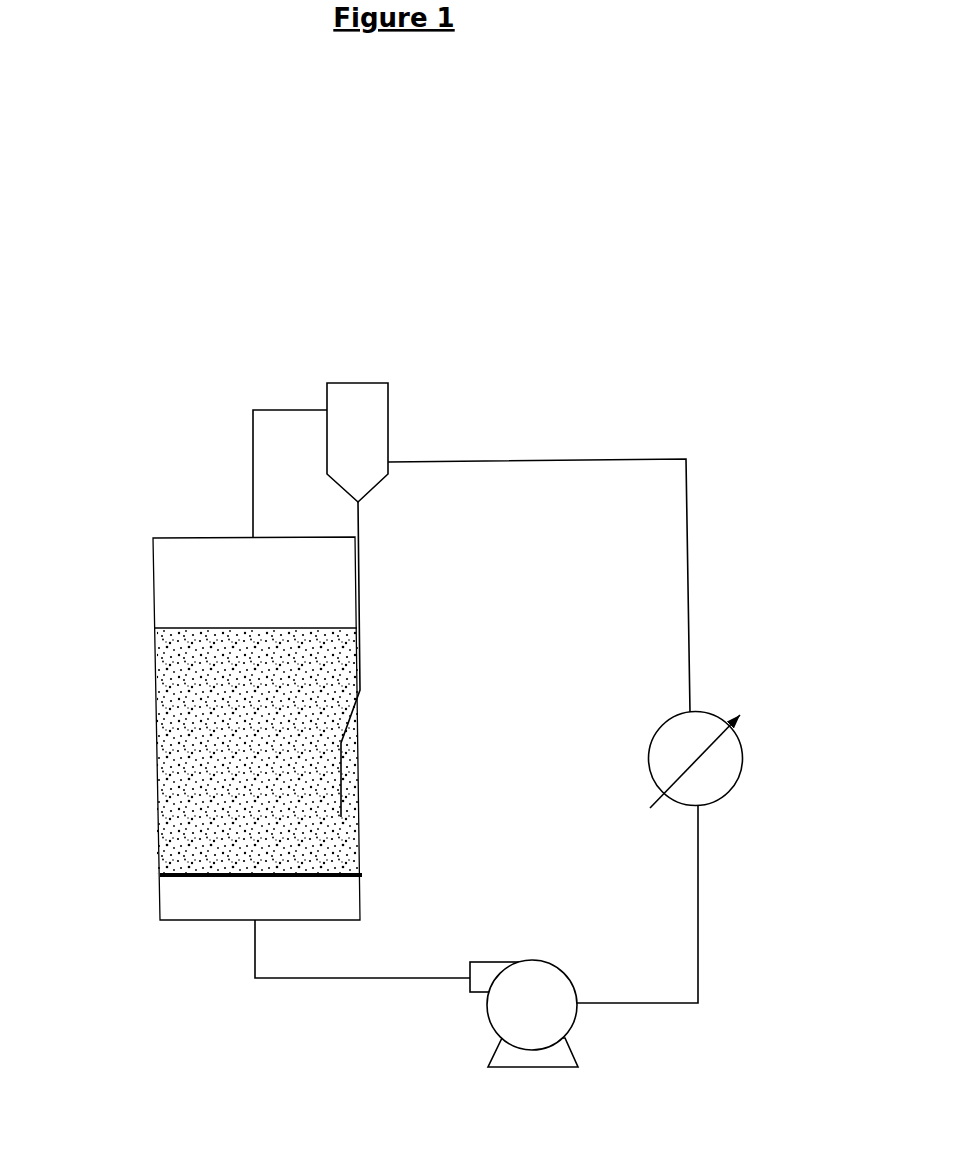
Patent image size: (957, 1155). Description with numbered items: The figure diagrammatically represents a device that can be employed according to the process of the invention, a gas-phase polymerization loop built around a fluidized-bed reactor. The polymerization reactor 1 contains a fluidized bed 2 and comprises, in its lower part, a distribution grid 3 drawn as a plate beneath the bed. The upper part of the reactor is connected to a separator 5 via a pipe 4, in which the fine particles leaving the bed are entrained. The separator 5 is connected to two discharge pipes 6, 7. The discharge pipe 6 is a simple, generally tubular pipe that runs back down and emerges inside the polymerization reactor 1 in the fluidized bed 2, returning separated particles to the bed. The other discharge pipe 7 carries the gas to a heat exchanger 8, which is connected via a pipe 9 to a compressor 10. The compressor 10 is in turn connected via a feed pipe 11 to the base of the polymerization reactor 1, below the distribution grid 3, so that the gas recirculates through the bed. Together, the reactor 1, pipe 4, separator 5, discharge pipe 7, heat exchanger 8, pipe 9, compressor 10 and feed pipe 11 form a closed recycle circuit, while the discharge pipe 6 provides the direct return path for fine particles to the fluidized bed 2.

The polymerization reactor 1 is at (204, 725).
The fluidized bed 2 is at (221, 752).
The distribution grid 3 is at (232, 919).
The pipe 4 is at (236, 473).
The separator 5 is at (309, 417).
The discharge pipe 6 is at (420, 659).
The discharge pipe 7 is at (606, 585).
The heat exchanger 8 is at (763, 760).
The pipe 9 is at (705, 904).
The compressor 10 is at (593, 1035).
The feed pipe 11 is at (349, 992).